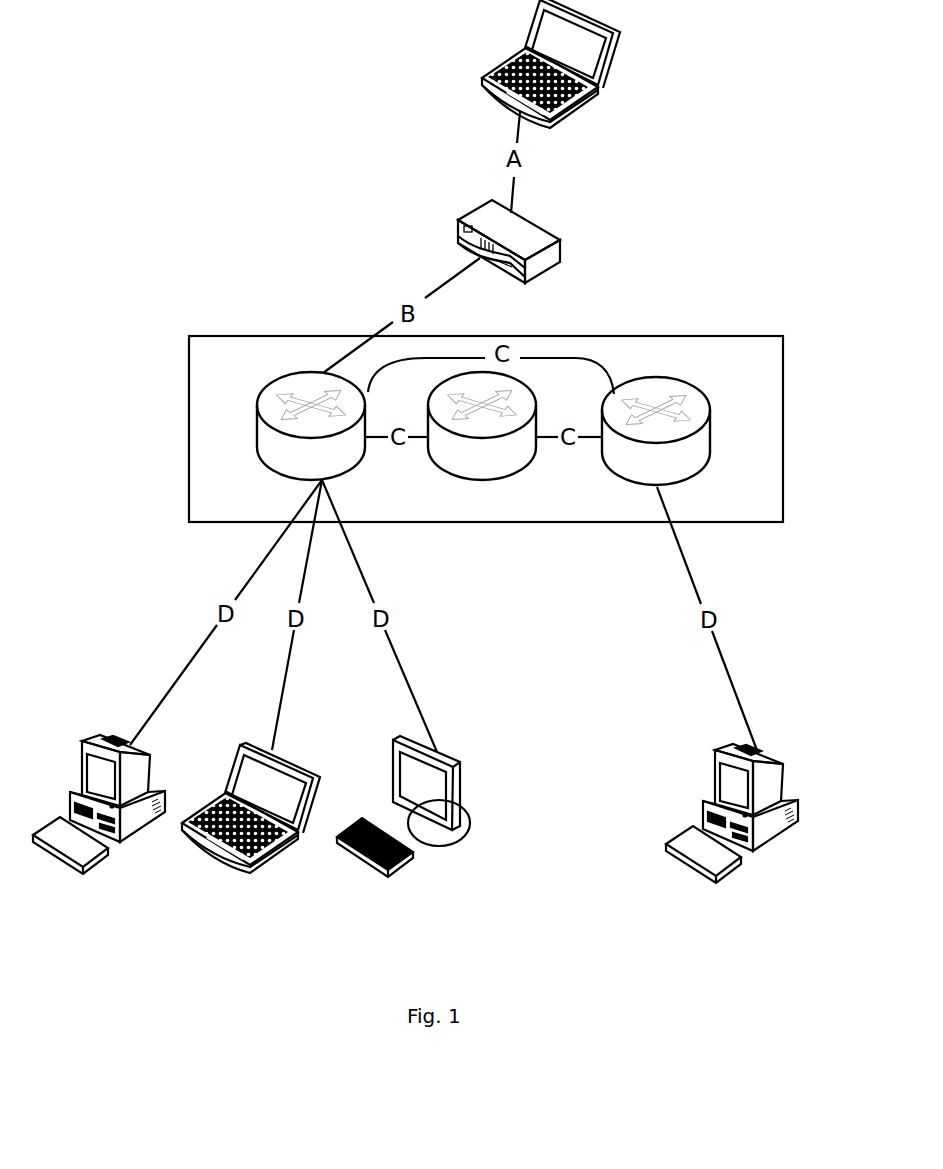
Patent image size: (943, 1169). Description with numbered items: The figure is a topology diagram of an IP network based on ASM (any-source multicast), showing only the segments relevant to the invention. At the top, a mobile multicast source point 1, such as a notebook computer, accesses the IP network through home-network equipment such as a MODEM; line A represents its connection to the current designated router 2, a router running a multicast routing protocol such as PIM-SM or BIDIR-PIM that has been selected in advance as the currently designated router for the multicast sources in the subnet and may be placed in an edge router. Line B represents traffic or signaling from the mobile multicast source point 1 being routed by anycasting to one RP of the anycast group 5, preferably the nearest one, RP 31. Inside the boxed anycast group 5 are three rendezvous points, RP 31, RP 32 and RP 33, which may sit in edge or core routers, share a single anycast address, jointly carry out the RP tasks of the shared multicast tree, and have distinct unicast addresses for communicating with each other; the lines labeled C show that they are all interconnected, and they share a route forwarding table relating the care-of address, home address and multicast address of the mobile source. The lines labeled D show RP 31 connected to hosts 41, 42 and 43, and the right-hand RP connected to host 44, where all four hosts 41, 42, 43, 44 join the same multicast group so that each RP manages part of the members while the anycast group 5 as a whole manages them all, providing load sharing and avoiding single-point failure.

The mobile multicast source point 1 is at (551, 78).
The current designated router 2 is at (509, 260).
The anycast group 5 is at (783, 418).
The RP 31 is at (314, 442).
The RP 32 is at (484, 442).
The RP 33 is at (669, 445).
The host 41 is at (99, 820).
The host 42 is at (251, 824).
The host 43 is at (403, 820).
The host 44 is at (732, 830).